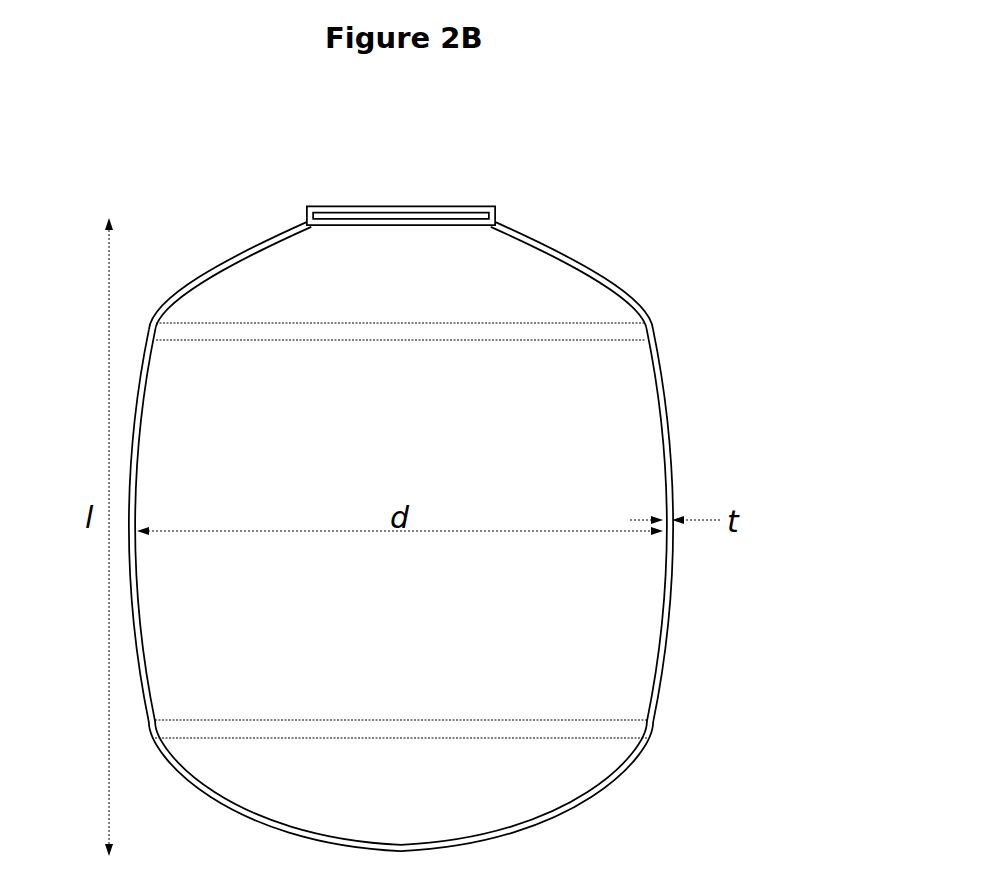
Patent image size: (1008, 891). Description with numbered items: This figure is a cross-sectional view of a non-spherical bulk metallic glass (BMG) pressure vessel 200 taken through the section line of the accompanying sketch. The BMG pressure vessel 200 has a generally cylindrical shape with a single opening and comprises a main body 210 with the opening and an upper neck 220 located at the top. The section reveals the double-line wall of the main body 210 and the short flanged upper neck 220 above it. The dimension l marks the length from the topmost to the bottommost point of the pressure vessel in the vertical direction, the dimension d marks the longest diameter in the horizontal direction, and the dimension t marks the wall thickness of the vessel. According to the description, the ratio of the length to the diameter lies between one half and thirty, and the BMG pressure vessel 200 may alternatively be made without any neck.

The BMG pressure vessel 200 is at (86, 128).
The main body 210 is at (686, 437).
The upper neck 220 is at (514, 215).